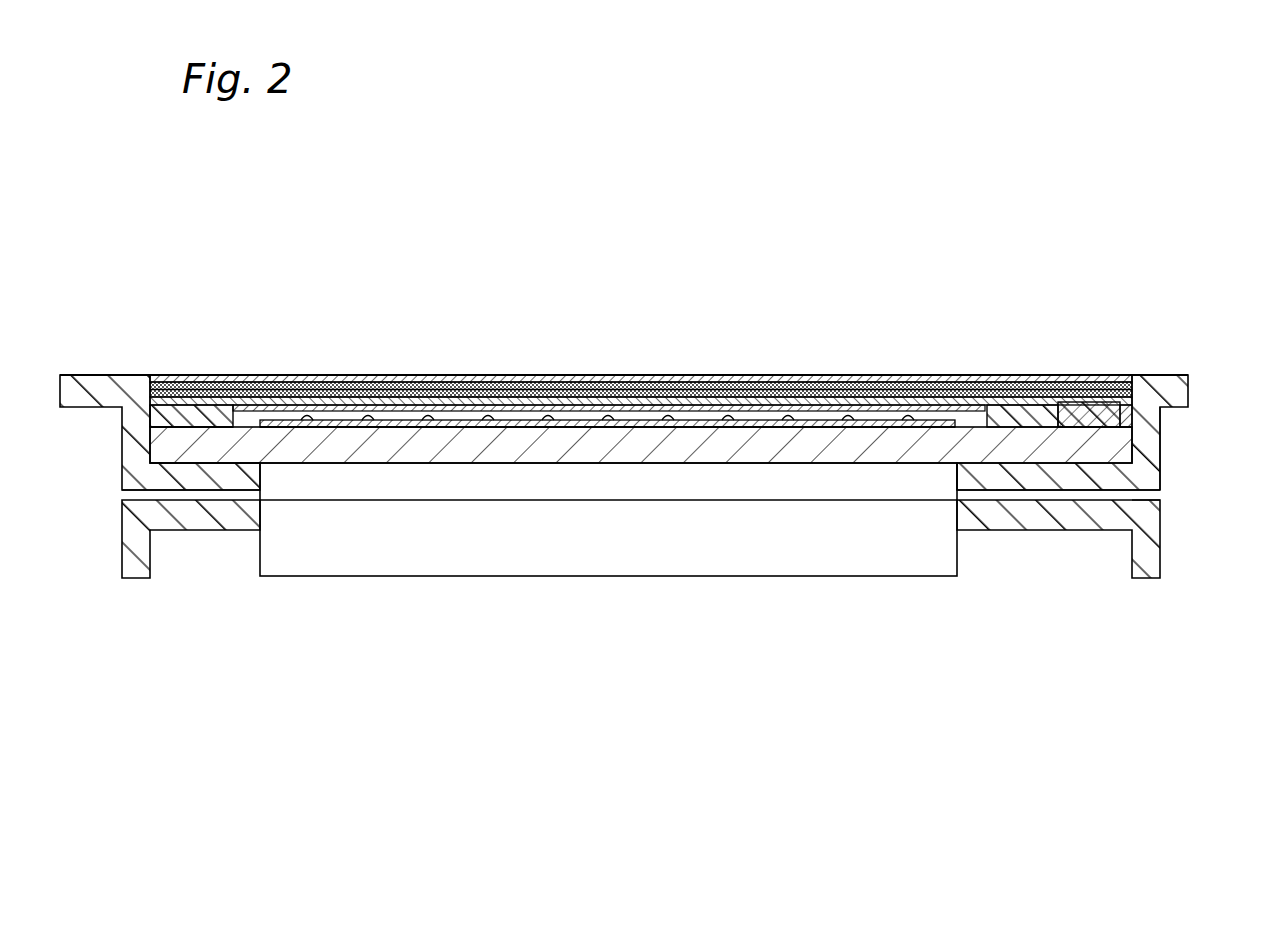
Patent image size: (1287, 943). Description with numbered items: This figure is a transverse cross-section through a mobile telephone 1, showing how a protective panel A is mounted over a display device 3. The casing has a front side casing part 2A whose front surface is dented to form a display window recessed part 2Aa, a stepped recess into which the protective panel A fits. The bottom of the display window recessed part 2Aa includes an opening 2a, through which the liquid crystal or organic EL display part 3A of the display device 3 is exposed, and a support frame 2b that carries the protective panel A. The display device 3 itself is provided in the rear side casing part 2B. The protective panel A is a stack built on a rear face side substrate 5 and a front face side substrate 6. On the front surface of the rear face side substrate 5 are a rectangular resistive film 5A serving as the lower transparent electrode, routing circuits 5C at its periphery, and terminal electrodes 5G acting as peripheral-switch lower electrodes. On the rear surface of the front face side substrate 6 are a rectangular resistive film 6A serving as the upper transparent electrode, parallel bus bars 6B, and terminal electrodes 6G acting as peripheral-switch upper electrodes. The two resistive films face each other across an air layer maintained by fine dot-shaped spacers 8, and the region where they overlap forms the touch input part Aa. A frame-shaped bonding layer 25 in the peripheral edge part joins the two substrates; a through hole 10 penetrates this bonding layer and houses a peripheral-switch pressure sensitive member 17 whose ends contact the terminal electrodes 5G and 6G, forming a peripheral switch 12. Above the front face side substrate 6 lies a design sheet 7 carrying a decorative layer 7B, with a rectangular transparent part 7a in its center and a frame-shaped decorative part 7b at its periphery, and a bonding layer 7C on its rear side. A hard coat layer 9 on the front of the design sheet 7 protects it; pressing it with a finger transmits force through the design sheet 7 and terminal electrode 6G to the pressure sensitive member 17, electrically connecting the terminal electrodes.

The mobile telephone 1 is at (178, 273).
The front side casing part 2A is at (1175, 375).
The display window recessed part 2Aa is at (193, 460).
The opening 2a is at (955, 468).
The support frame 2b is at (178, 478).
The rear side casing part 2B is at (1160, 553).
The display device 3 is at (640, 550).
The display part 3A is at (445, 480).
The rear face side substrate 5 is at (730, 445).
The resistive film 5A is at (530, 432).
The routing circuits 5C is at (196, 405).
The terminal electrodes 5G is at (1103, 446).
The front face side substrate 6 is at (1034, 428).
The resistive film 6A is at (818, 422).
The bus bars 6B is at (243, 412).
The terminal electrodes 6G is at (1090, 412).
The design sheet 7 is at (641, 321).
The decorative layer 7B is at (370, 277).
The bonding layer 7C is at (602, 380).
The transparent part 7a is at (378, 401).
The decorative part 7b is at (255, 408).
The spacers 8 is at (551, 394).
The hard coat layer 9 is at (461, 392).
The through hole 10 is at (1172, 385).
The peripheral switch 12 is at (1158, 502).
The peripheral-switch pressure sensitive member 17 is at (1160, 455).
The bonding layer 25 is at (161, 410).
The protective panel A is at (880, 320).
The touch input part Aa is at (755, 372).